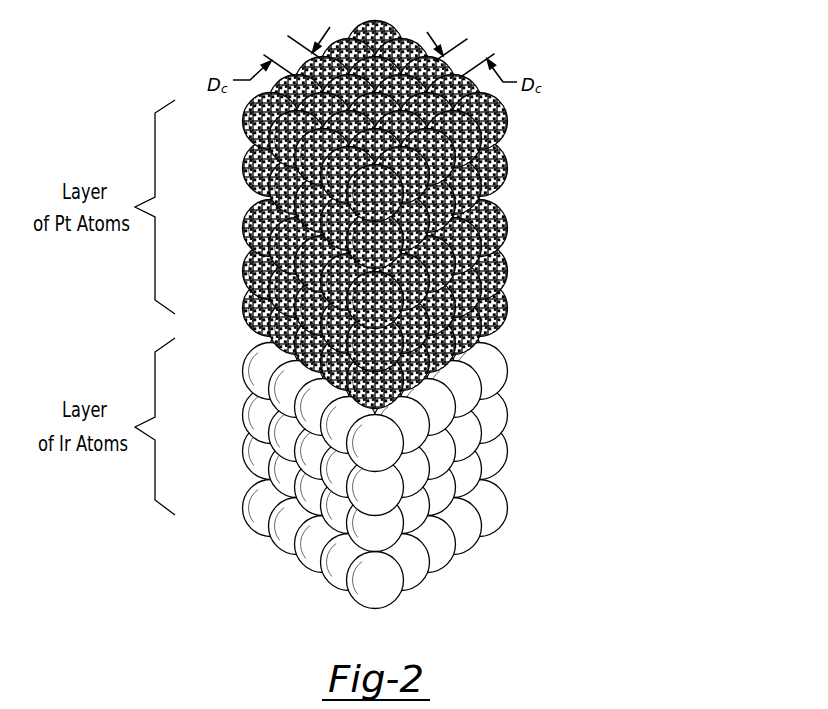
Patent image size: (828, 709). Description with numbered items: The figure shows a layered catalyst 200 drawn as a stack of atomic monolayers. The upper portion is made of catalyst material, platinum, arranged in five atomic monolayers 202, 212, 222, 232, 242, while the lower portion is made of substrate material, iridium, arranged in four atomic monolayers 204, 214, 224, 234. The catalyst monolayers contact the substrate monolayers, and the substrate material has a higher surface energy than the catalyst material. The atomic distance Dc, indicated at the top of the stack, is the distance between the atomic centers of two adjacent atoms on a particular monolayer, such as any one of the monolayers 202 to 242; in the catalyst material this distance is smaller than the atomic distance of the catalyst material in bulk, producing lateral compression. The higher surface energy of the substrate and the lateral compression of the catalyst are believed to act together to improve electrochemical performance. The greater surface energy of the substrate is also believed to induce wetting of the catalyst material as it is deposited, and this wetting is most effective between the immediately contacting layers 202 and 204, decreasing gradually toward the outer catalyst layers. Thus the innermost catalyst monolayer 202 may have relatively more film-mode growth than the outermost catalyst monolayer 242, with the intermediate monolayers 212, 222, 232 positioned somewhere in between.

The layered catalyst 200 is at (464, 315).
The outermost catalyst material monolayer 242 is at (507, 111).
The catalyst material atomic monolayer 232 is at (507, 158).
The catalyst material atomic monolayer 222 is at (507, 218).
The catalyst material atomic monolayer 212 is at (507, 261).
The innermost catalyst material monolayer 202 is at (507, 298).
The substrate material atomic monolayer 204 is at (507, 361).
The substrate material atomic monolayer 214 is at (507, 405).
The substrate material atomic monolayer 224 is at (507, 441).
The substrate material atomic monolayer 234 is at (507, 498).